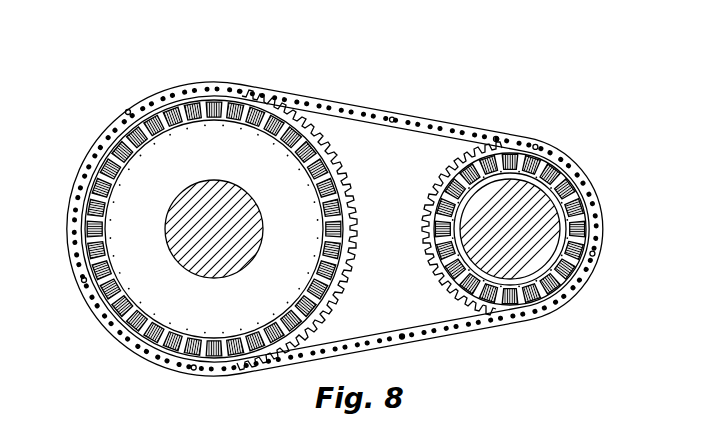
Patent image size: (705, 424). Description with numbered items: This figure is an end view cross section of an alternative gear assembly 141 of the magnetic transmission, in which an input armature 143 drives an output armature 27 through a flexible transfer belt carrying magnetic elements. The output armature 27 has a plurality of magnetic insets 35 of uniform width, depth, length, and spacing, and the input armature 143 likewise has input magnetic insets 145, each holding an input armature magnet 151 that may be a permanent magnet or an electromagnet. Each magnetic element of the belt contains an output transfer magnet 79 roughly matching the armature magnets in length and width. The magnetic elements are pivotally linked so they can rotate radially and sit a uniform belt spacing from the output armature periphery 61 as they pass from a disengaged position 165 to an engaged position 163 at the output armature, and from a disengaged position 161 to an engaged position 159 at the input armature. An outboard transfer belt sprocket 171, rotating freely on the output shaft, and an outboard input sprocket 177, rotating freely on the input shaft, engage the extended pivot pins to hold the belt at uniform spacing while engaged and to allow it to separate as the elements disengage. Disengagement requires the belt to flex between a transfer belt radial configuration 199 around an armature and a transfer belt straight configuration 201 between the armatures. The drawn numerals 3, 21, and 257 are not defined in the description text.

The driven sprocket assembly 3 is at (594, 200).
The shaft 21 is at (167, 240).
The output armature 27 is at (283, 105).
The magnetic insets 35 is at (72, 182).
The output armature periphery 61 is at (82, 282).
The output transfer magnet 79 is at (198, 82).
The gear assembly 141 is at (193, 372).
The input armature 143 is at (455, 150).
The input magnetic insets 145 is at (495, 135).
The input armature magnet 151 is at (535, 148).
The engaged position 159 is at (597, 257).
The disengaged position 161 is at (442, 175).
The engaged position 163 is at (128, 112).
The disengaged position 165 is at (402, 343).
The outboard transfer belt sprocket 171 is at (340, 165).
The outboard input sprocket 177 is at (418, 215).
The transfer belt radial configuration 199 is at (102, 132).
The transfer belt straight configuration 201 is at (392, 110).
The sprocket tooth 257 is at (479, 305).